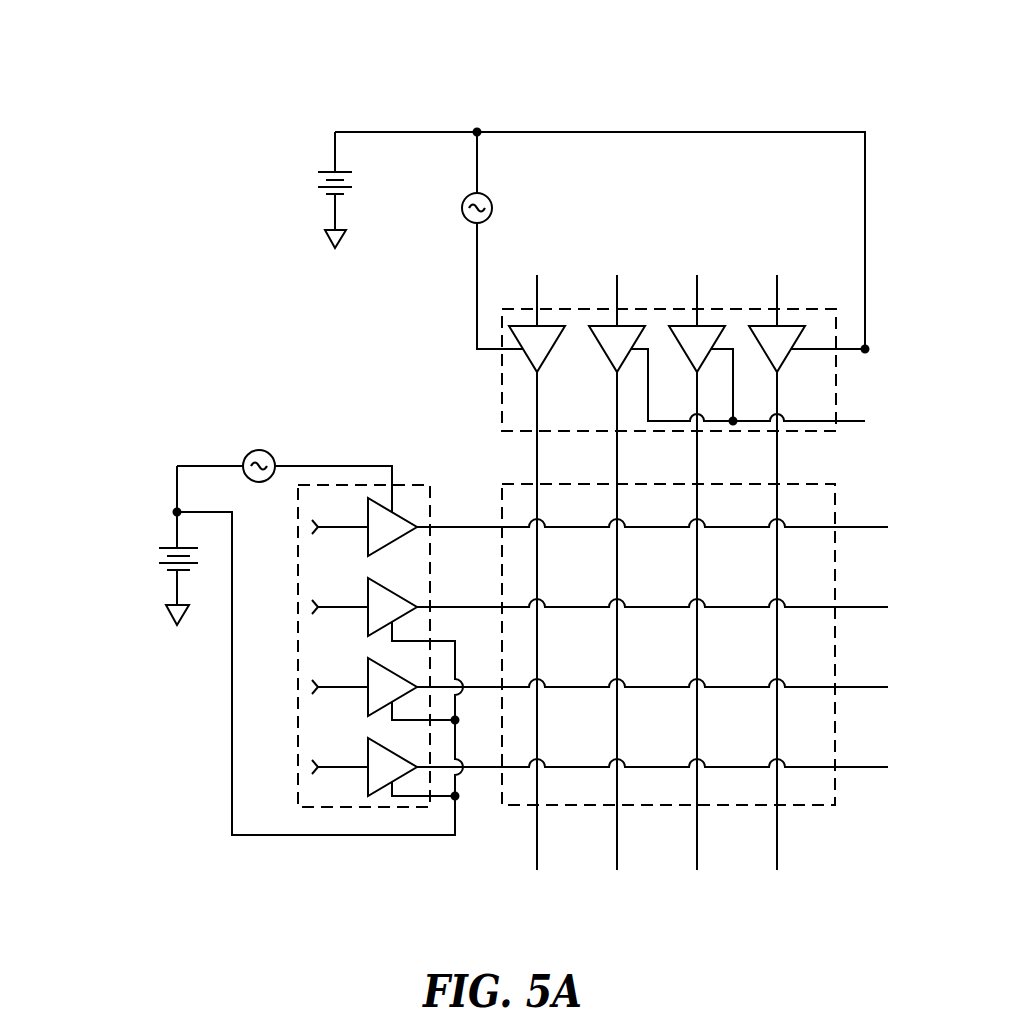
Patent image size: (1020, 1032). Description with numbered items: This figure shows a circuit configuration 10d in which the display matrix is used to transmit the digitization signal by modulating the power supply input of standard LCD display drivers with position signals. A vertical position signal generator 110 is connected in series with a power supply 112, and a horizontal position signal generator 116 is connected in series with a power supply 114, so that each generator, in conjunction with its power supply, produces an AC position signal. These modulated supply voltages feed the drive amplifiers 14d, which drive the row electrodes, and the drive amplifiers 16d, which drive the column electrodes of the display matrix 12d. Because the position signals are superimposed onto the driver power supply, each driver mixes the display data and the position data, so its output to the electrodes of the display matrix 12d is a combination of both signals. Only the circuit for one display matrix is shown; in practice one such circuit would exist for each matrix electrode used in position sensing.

The circuit configuration 10d is at (470, 83).
The signal generator 110 is at (268, 453).
The power supply 112 is at (160, 578).
The power supply 114 is at (387, 186).
The signal generator 116 is at (470, 222).
The display matrix 12d is at (830, 513).
The drive amplifiers 14d is at (420, 484).
The drive amplifiers 16d is at (500, 413).